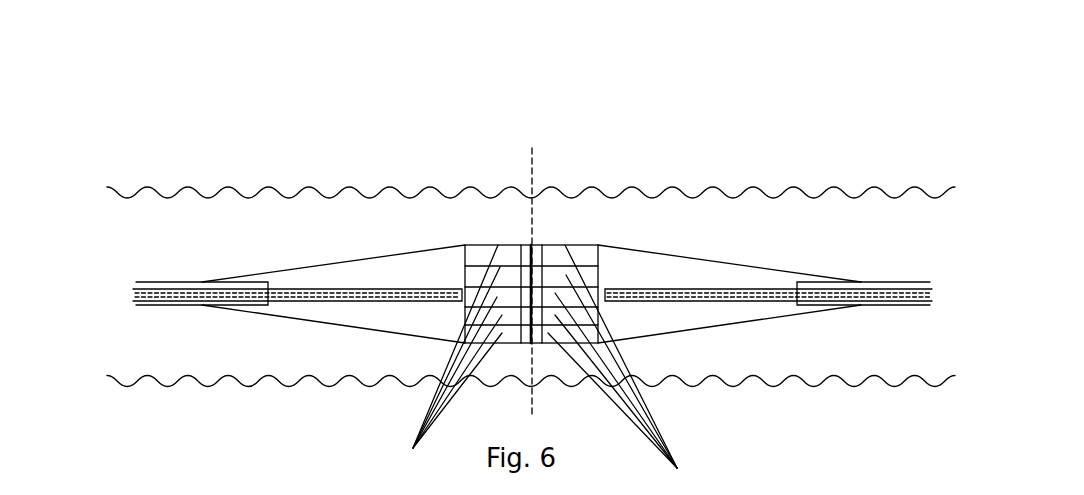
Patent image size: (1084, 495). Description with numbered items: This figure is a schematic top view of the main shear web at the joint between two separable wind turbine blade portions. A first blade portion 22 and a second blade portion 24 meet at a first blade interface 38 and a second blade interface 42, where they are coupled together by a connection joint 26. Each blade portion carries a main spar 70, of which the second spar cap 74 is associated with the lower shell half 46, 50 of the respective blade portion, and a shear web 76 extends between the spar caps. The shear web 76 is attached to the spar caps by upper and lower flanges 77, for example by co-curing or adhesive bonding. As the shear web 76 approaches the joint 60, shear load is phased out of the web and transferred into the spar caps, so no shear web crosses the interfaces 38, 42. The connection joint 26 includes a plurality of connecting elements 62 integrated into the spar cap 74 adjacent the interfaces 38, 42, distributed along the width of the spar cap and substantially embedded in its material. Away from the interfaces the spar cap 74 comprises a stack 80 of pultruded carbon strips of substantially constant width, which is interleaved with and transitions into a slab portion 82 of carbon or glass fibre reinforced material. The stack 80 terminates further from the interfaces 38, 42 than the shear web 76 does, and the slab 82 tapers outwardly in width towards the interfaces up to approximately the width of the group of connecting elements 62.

The first blade portion 22 is at (178, 113).
The second blade portion 24 is at (738, 113).
The connection joint 26 is at (540, 240).
The first blade interface 38 is at (522, 218).
The second blade interface 42 is at (538, 218).
The lower shell half 46 is at (345, 220).
The lower shell half 50 is at (758, 212).
The joint 60 is at (527, 148).
The connecting elements 62 is at (537, 370).
The main spar 70 is at (135, 295).
The second spar cap 74 is at (308, 315).
The shear web 76 is at (293, 295).
The upper and lower flanges 77 is at (373, 288).
The stack of pultruded carbon strips 80 is at (157, 307).
The slab portion 82 is at (633, 265).